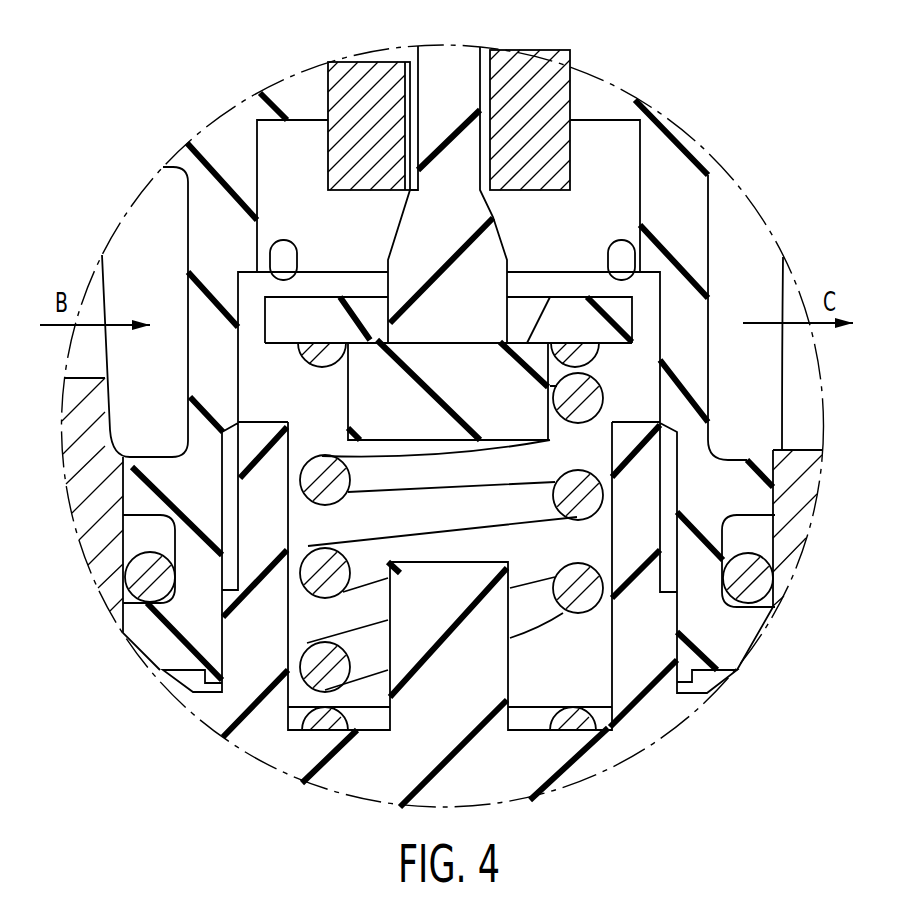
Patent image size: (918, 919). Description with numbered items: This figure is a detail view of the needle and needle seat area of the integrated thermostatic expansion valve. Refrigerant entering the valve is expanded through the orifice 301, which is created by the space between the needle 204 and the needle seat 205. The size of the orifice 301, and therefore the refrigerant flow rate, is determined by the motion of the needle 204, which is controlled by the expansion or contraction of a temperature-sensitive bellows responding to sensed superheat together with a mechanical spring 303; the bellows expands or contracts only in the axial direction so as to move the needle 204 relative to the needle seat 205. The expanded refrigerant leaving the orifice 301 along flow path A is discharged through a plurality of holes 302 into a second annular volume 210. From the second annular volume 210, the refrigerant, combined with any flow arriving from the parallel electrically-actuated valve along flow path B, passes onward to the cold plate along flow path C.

The needle 204 is at (448, 72).
The needle seat 205 is at (545, 83).
The second annular volume 210 is at (745, 250).
The orifice 301 is at (408, 60).
The holes 302 is at (280, 257).
The mechanical spring 303 is at (337, 487).